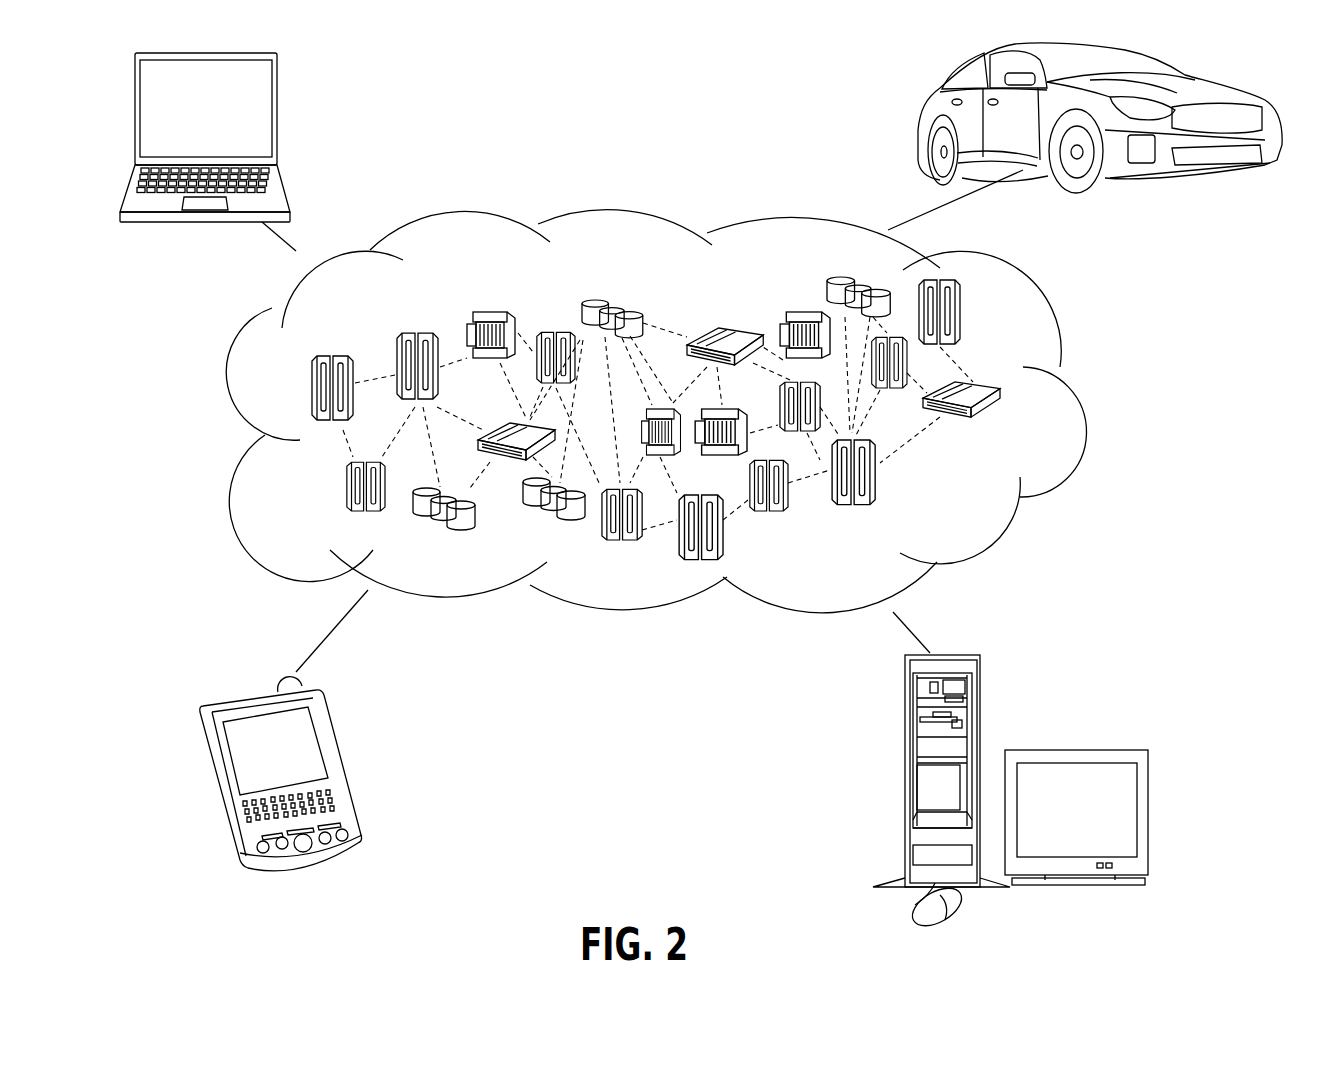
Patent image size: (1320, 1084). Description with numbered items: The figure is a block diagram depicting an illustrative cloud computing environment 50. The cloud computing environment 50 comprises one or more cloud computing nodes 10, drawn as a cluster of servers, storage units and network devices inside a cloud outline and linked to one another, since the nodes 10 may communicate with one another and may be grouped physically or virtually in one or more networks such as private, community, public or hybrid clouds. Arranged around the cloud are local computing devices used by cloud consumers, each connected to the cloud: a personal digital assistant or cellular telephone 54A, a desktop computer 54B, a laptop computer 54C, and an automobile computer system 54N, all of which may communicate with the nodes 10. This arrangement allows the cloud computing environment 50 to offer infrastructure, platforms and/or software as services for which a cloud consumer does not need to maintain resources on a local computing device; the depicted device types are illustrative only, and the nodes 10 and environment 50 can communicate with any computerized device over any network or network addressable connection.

The cloud computing environment 50 is at (1075, 398).
The cloud computing nodes 10 is at (988, 510).
The personal digital assistant or cellular telephone 54A is at (333, 733).
The desktop computer 54B is at (905, 717).
The laptop computer 54C is at (277, 92).
The automobile computer system 54N is at (918, 110).